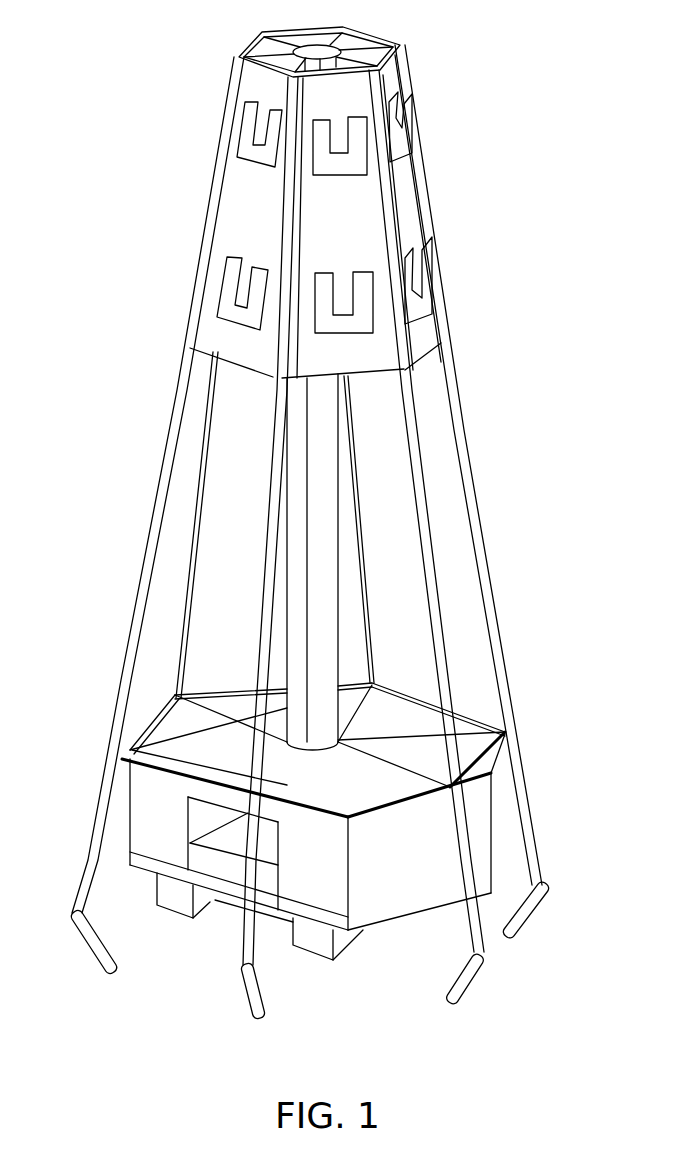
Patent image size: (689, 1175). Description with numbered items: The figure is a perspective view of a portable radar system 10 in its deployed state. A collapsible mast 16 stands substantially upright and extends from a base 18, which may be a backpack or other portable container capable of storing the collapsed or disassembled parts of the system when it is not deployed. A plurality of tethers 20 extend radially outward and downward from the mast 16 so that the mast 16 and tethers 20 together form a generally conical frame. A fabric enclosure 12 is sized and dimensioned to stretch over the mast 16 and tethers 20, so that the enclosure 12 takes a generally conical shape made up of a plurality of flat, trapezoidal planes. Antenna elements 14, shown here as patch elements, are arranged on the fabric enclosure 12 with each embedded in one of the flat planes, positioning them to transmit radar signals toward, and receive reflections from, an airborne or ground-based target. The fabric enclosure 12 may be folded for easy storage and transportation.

The portable radar system 10 is at (104, 210).
The fabric enclosure 12 is at (444, 432).
The antenna elements 14 is at (405, 184).
The mast 16 is at (320, 476).
The base 18 is at (495, 818).
The tethers 20 is at (432, 585).